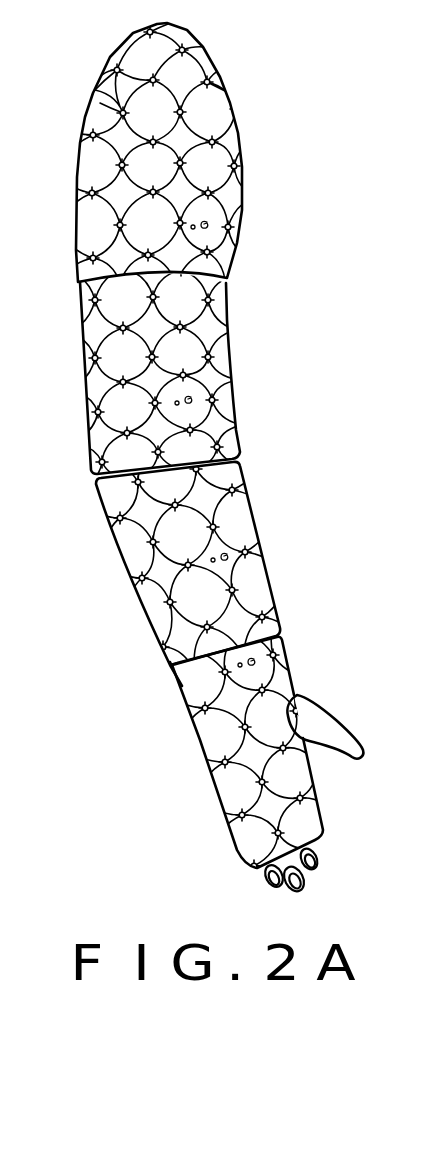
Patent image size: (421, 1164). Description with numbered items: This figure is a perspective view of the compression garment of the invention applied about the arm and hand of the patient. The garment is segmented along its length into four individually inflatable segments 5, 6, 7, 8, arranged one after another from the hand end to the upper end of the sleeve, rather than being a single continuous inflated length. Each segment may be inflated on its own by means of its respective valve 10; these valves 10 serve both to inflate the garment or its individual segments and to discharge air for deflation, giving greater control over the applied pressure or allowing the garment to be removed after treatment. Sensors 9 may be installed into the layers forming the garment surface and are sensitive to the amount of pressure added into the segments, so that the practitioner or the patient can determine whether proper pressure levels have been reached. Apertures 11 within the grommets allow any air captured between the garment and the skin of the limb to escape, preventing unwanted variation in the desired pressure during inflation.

The segment 5 is at (220, 736).
The segment 6 is at (133, 549).
The segment 7 is at (98, 328).
The segment 8 is at (97, 170).
The sensor 9 is at (203, 223).
The valve 10 is at (188, 397).
The aperture 11 is at (215, 525).